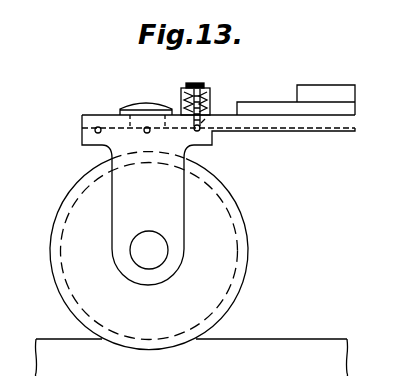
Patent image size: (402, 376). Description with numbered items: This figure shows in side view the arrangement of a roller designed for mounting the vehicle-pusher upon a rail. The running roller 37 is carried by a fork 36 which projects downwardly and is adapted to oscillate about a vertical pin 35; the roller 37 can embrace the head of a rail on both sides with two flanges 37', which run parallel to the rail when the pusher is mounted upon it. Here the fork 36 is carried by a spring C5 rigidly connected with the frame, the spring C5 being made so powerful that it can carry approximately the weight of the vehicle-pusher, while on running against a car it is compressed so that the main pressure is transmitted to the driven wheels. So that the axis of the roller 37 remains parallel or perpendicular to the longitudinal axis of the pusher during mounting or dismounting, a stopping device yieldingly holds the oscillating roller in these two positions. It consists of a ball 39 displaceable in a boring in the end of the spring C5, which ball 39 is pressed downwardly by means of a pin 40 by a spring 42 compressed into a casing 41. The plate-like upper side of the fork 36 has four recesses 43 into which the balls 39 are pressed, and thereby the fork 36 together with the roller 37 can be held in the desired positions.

The vertical pin 35 is at (122, 111).
The fork 36 is at (168, 185).
The roller 37 is at (166, 251).
The flanges 37' is at (171, 251).
The ball 39 is at (201, 124).
The pin 40 is at (199, 126).
The casing 41 is at (181, 94).
The spring 42 is at (204, 87).
The recesses 43 is at (97, 131).
The spring C5 is at (272, 108).